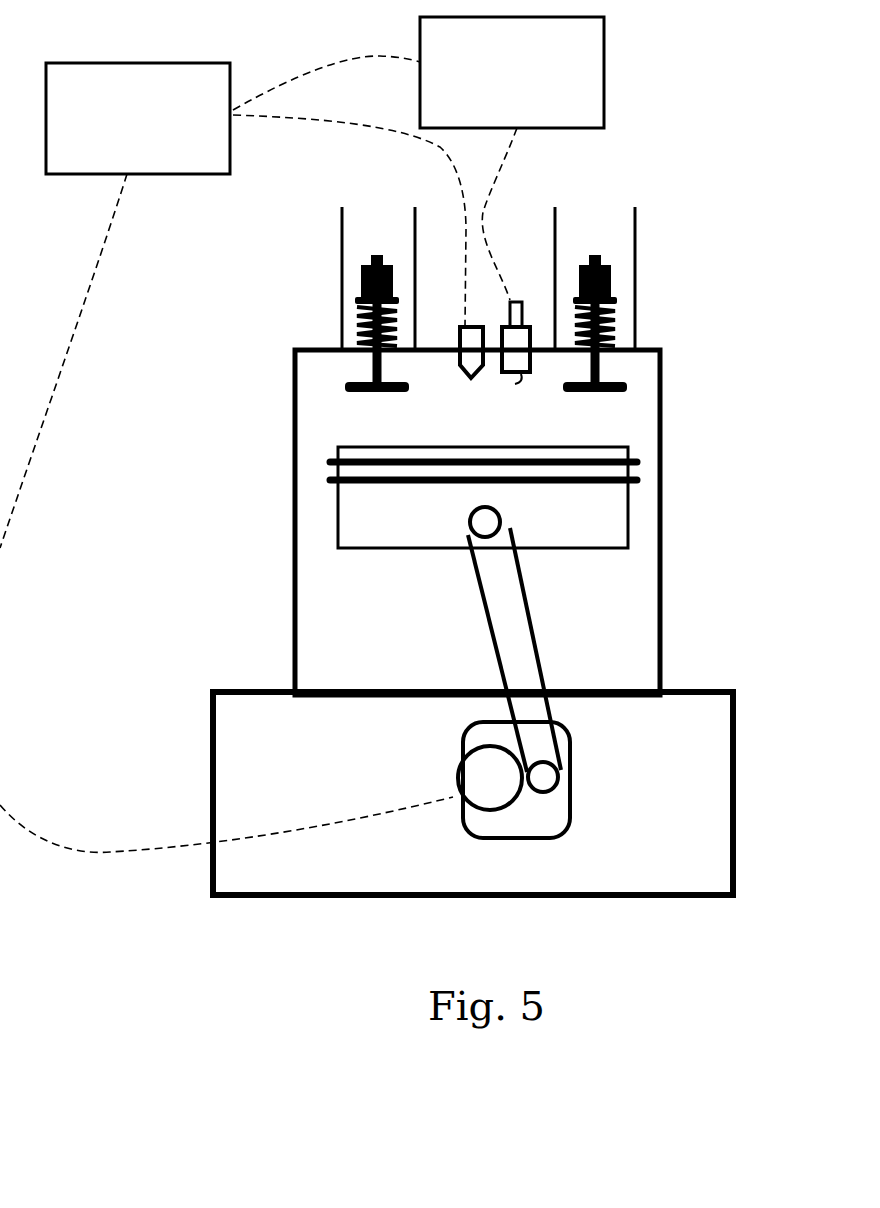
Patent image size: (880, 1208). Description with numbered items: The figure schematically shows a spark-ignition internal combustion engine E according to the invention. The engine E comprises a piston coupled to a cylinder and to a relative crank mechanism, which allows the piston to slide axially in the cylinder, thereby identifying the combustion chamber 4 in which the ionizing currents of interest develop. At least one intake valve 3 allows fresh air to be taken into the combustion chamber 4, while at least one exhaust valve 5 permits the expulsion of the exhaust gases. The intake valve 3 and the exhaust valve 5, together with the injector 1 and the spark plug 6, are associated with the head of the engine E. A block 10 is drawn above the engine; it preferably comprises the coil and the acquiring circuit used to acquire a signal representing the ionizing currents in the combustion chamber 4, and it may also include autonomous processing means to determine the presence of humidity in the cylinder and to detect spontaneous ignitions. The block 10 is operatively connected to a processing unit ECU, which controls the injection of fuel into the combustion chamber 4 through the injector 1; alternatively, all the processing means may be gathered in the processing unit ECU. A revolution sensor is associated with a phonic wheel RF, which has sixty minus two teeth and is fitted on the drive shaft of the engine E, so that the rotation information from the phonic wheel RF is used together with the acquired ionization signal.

The injector 1 is at (475, 355).
The intake valve 3 is at (615, 283).
The combustion chamber 4 is at (612, 428).
The exhaust valve 5 is at (373, 370).
The spark plug 6 is at (515, 362).
The block 10 is at (529, 77).
The processing unit ECU is at (182, 130).
The phonic wheel RF is at (430, 779).
The spark-ignition internal combustion engine E is at (196, 957).